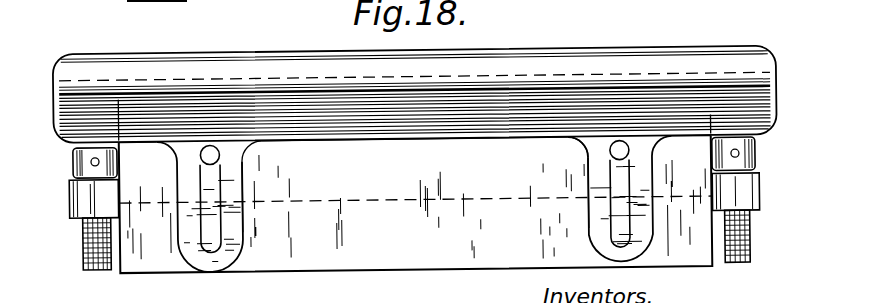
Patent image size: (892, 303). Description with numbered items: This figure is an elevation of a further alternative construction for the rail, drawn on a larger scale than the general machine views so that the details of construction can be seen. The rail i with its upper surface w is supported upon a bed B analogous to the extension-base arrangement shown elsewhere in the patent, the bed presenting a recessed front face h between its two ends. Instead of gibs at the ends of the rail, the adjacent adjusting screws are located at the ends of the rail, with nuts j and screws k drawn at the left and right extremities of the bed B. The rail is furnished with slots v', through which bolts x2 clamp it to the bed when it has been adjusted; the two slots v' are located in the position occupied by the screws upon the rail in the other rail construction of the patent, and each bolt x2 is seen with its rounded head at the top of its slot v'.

The bar i is at (745, 76).
The bar top surface w is at (660, 44).
The block B is at (380, 272).
The recess panel h is at (415, 184).
The slots v' is at (415, 204).
The bolts x2 is at (612, 157).
The nut j is at (784, 185).
The bolt k is at (770, 233).